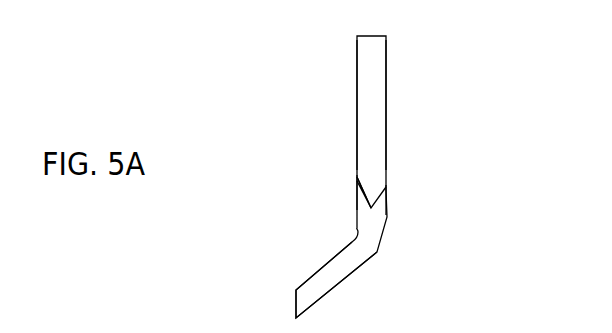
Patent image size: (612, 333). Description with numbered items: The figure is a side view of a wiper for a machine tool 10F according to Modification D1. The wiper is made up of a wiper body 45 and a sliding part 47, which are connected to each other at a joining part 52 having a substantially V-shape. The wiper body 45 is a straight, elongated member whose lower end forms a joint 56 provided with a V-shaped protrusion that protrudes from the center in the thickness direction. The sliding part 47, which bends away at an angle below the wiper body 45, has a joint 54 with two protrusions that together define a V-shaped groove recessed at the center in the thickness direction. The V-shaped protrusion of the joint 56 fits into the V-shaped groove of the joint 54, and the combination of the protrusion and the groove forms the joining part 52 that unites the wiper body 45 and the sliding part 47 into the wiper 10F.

The wiper for a machine tool 10F is at (408, 52).
The wiper body 45 is at (358, 118).
The joining part 52 is at (407, 185).
The joint of the wiper body 56 is at (357, 176).
The joint of the sliding part 54 is at (357, 207).
The sliding part 47 is at (338, 272).